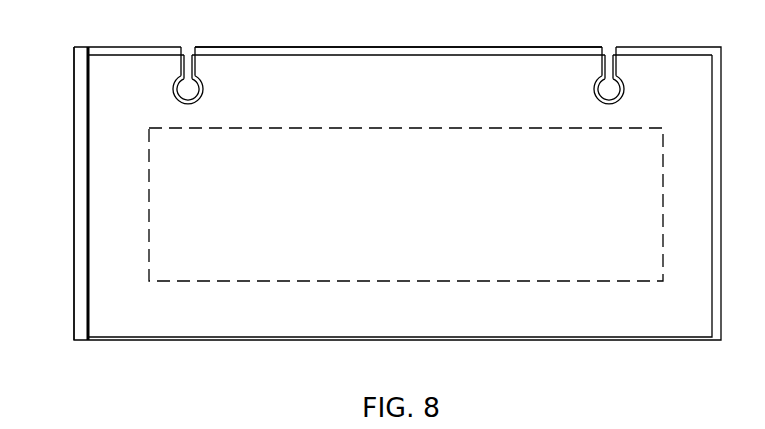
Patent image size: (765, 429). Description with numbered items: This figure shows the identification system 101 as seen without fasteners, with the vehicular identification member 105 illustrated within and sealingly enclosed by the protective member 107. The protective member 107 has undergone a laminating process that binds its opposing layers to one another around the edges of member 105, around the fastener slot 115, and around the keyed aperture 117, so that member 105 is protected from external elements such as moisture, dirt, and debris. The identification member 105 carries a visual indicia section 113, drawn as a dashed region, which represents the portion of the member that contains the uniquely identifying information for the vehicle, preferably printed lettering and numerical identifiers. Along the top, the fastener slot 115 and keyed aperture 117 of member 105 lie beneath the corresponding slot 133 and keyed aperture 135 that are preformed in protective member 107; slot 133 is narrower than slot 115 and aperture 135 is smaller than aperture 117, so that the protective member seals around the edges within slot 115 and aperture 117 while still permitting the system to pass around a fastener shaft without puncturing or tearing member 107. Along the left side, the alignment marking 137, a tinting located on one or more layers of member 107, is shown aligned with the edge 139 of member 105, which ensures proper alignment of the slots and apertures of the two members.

The identification system 101 is at (112, 365).
The vehicular identification member 105 is at (383, 57).
The protective member 107 is at (435, 48).
The visual indicia section 113 is at (473, 282).
The fastener slot 115 is at (617, 63).
The keyed aperture 117 is at (593, 90).
The slot 133 is at (183, 56).
The keyed aperture 135 is at (197, 82).
The alignment marking 137 is at (73, 48).
The edge 139 is at (90, 143).